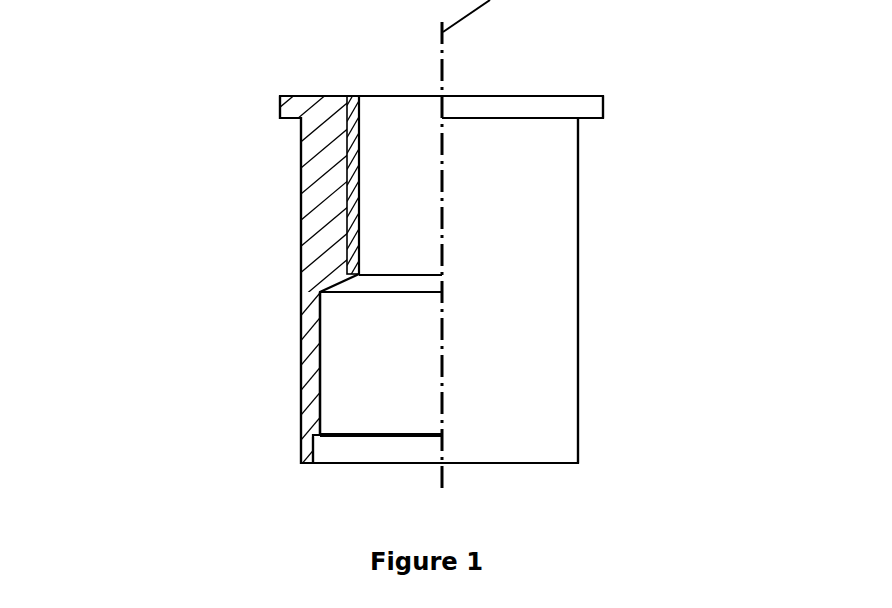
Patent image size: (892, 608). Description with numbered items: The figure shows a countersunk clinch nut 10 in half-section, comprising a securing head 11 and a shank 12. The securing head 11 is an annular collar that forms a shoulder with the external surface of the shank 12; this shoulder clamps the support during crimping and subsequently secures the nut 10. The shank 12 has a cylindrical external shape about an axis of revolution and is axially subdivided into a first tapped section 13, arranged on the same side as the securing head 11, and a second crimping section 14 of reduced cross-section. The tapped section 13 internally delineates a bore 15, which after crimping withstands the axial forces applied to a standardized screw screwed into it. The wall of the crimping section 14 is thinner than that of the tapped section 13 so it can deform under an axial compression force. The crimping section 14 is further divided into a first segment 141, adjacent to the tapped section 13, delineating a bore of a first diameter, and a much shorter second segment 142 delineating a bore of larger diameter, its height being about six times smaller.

The countersunk clinch nut 10 is at (176, 147).
The securing head 11 is at (563, 110).
The shank 12 is at (557, 280).
The first tapped section 13 is at (313, 212).
The second crimping section 14 is at (307, 325).
The first segment 141 is at (285, 290).
The second segment 142 is at (285, 438).
The bore 15 is at (352, 160).